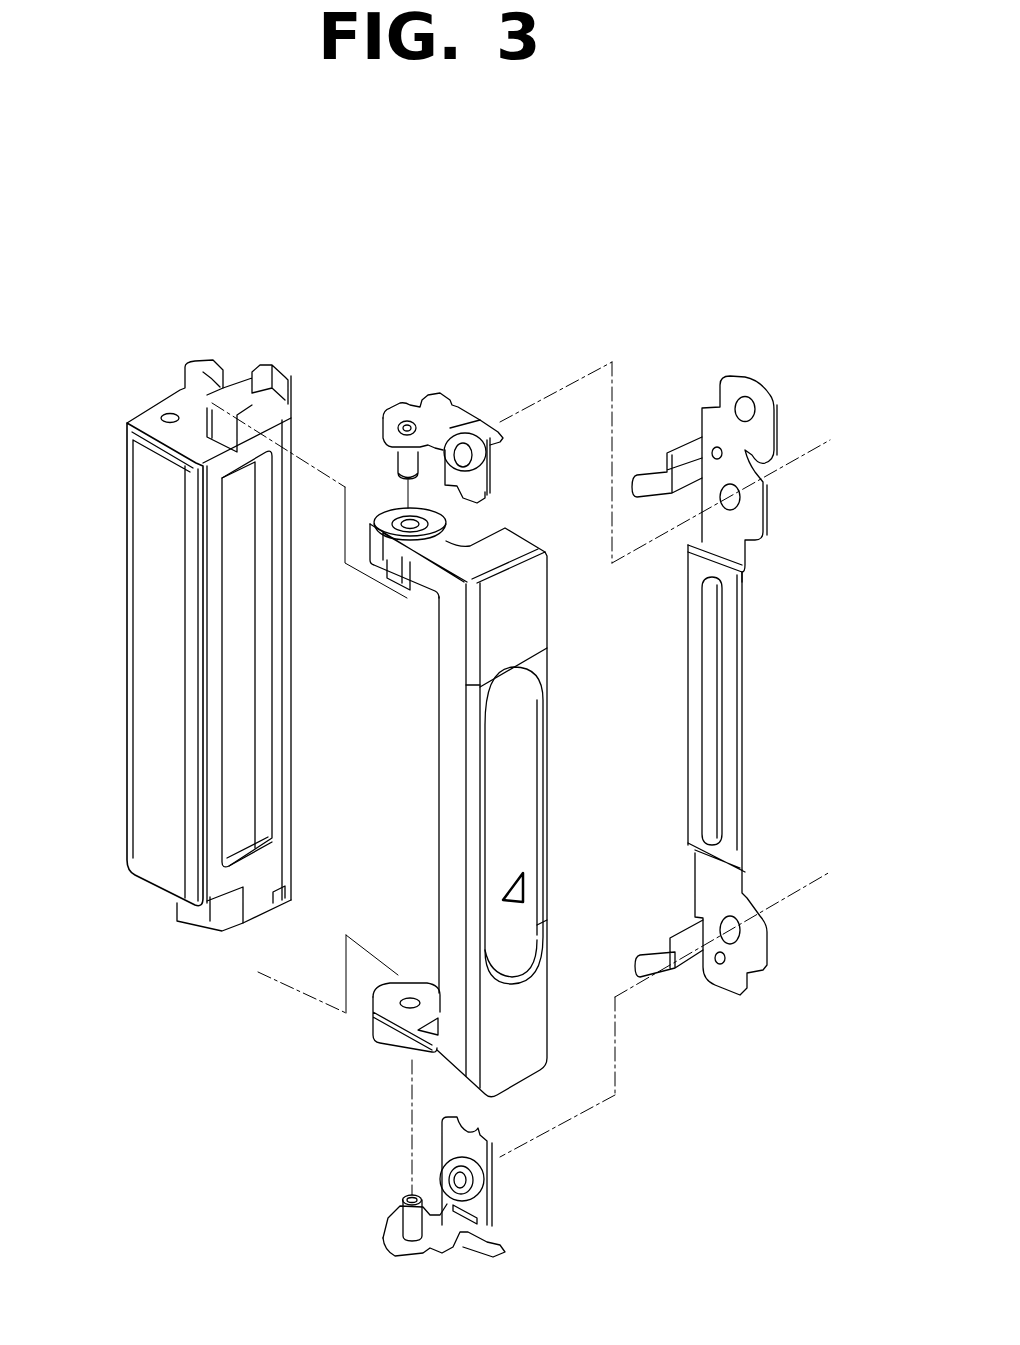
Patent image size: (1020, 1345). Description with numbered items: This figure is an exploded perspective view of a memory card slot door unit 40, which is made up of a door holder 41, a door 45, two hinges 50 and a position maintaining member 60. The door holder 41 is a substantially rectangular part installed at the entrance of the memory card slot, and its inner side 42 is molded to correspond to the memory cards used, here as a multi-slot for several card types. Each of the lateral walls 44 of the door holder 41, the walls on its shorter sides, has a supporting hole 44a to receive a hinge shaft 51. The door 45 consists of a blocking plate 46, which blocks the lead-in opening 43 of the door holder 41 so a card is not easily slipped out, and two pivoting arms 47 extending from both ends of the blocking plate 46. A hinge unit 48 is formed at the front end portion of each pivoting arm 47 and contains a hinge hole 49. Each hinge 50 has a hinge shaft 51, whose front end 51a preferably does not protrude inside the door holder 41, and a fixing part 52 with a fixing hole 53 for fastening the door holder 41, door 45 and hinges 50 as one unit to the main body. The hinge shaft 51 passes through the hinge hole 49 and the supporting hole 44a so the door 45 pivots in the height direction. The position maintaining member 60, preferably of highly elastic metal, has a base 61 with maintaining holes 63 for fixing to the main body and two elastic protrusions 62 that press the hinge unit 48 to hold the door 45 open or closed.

The memory card slot door unit 40 is at (388, 231).
The door holder 41 is at (145, 508).
The inner side 42 is at (240, 825).
The lead-in opening 43 is at (235, 618).
The lateral walls 44 is at (150, 420).
The supporting holes 44a is at (170, 414).
The door 45 is at (283, 1094).
The blocking plate 46 is at (436, 1020).
The pivoting arms 47 is at (404, 562).
The hinge unit 48 is at (392, 993).
The hinge hole 49 is at (405, 520).
The hinges 50 is at (447, 388).
The hinge shaft 51 is at (400, 452).
The front end 51a is at (407, 1196).
The fixing part 52 is at (480, 405).
The fixing hole 53 is at (432, 464).
The position maintaining member 60 is at (745, 677).
The base 61 is at (730, 605).
The elastic protrusions 62 is at (650, 480).
The maintaining holes 63 is at (732, 494).